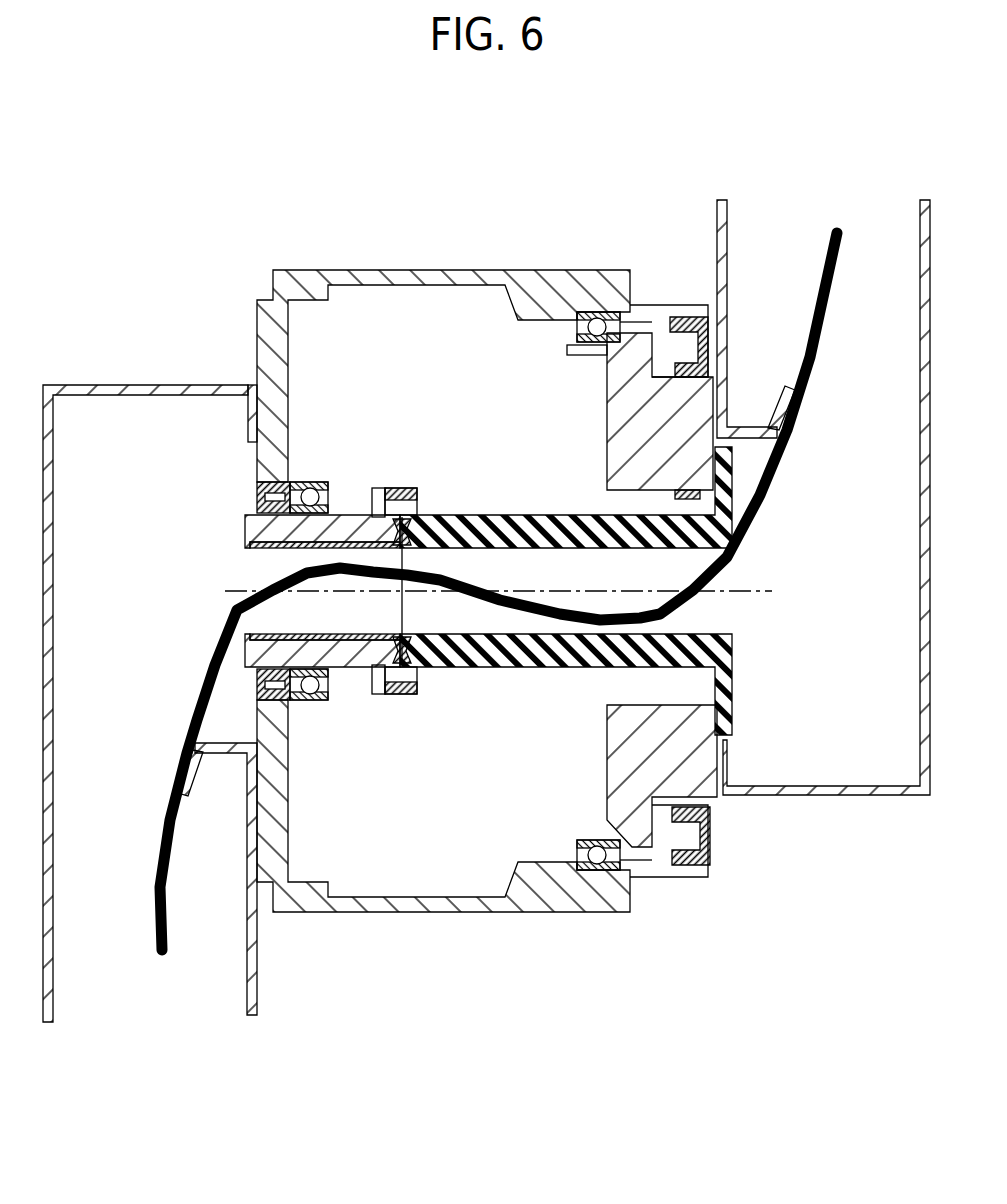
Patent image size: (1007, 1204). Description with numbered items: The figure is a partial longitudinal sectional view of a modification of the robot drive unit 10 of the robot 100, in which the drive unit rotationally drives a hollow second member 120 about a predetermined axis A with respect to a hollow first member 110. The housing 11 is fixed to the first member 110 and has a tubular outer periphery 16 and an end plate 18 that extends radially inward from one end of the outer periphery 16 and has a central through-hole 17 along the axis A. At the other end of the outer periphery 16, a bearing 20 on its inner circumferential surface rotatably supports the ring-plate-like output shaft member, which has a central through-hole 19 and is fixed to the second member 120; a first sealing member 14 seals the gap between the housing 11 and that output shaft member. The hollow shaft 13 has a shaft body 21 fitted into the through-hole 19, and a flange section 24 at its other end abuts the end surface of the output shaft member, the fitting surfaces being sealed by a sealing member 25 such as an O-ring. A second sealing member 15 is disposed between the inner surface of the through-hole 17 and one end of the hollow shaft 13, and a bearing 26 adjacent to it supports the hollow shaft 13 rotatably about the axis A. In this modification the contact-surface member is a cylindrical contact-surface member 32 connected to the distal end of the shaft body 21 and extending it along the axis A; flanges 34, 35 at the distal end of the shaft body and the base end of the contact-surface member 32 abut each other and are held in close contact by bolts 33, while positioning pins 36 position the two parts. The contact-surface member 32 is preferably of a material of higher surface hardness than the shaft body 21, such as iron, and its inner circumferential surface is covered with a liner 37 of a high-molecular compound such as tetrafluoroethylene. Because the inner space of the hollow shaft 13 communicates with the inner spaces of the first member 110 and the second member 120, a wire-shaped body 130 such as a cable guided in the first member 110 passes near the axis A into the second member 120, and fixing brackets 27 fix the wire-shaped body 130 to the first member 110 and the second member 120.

The robot 100 is at (126, 166).
The robot drive unit 10 is at (232, 248).
The housing 11 is at (402, 926).
The hollow shaft 13 is at (535, 682).
The first sealing member 14 is at (712, 832).
The second sealing member 15 is at (314, 735).
The outer periphery 16 is at (437, 328).
The through-hole 17 is at (257, 497).
The end plate 18 is at (256, 318).
The through-hole 19 is at (690, 494).
The bearing 20 is at (597, 310).
The shaft body 21 is at (501, 516).
The flange section 24 is at (700, 745).
The sealing member 25 is at (735, 650).
The bearing 26 is at (275, 692).
The fixing brackets 27 is at (772, 410).
The contact-surface member 32 is at (360, 514).
The bolts 33 is at (378, 487).
The flange 34 is at (405, 487).
The flange 35 is at (400, 695).
The positioning pins 36 is at (408, 540).
The liner 37 is at (250, 546).
The first member 110 is at (73, 384).
The second member 120 is at (880, 796).
The wire-shaped body 130 is at (815, 372).
The axis A is at (760, 590).